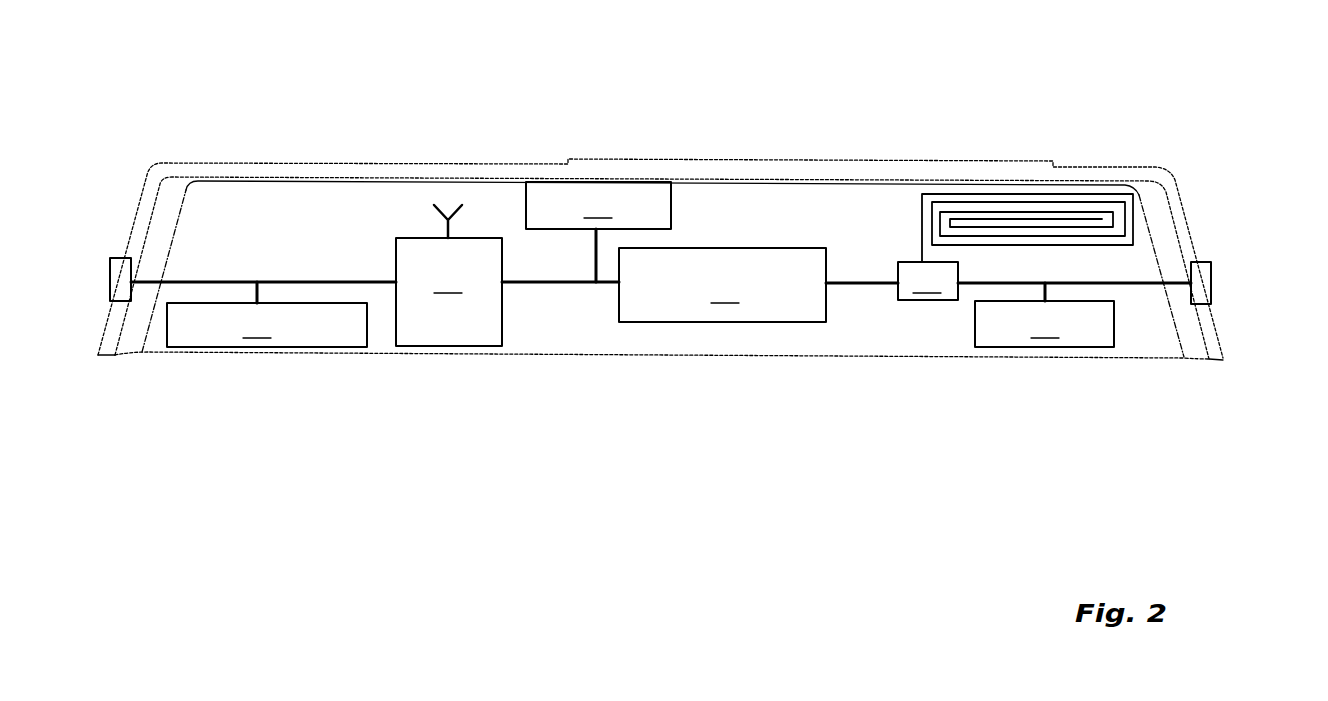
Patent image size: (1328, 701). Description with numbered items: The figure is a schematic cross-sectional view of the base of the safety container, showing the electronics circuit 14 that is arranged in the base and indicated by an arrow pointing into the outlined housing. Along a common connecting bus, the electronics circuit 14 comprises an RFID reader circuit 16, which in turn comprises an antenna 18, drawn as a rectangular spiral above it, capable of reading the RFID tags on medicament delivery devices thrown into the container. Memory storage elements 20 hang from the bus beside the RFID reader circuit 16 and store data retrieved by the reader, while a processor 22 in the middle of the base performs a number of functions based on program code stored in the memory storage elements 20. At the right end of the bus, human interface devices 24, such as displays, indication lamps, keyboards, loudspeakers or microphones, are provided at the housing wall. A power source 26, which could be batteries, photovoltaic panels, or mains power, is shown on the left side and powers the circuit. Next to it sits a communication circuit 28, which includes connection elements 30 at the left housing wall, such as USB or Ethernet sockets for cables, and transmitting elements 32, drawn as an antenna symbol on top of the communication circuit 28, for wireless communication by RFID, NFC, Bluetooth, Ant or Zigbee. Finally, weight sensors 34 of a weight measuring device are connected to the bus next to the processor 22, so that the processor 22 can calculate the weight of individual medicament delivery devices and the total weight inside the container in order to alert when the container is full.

The electronics circuit 14 is at (336, 242).
The RFID reader circuit 16 is at (928, 281).
The antenna 18 is at (1045, 197).
The memory storage elements 20 is at (1044, 324).
The processor 22 is at (722, 285).
The human interface devices 24 is at (1211, 277).
The power source 26 is at (267, 325).
The communication circuit 28 is at (449, 292).
The connection elements 30 is at (122, 268).
The transmitting elements 32 is at (448, 205).
The weight sensors 34 is at (598, 205).